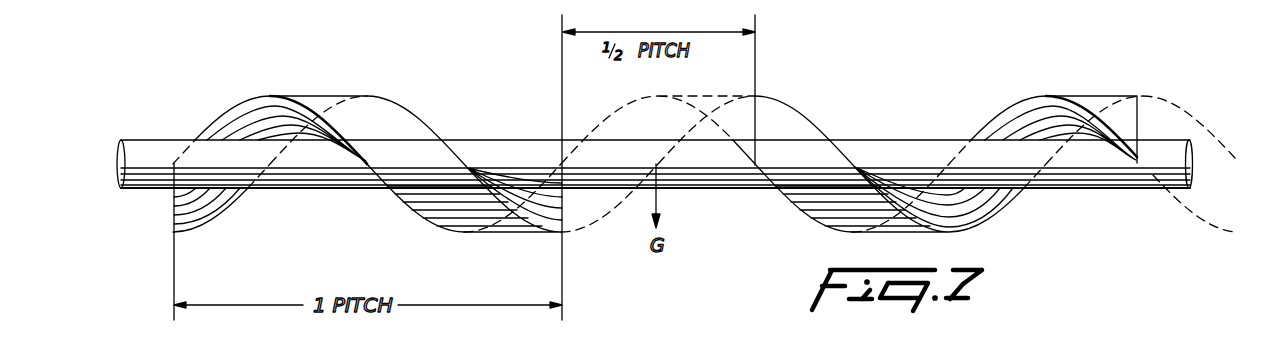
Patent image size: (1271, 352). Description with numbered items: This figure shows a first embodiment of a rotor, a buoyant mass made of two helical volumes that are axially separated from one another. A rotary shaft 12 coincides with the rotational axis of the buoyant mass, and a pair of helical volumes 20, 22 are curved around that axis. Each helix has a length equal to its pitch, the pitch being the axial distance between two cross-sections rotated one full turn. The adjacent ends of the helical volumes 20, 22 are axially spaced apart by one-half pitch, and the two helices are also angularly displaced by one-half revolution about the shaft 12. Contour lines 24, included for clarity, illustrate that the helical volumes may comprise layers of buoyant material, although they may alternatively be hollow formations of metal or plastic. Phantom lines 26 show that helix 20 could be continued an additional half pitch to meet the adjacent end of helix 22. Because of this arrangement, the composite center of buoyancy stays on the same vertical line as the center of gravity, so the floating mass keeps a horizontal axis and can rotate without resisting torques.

The rotary shaft 12 is at (145, 146).
The helical volume 20 is at (402, 122).
The helical volume 22 is at (790, 118).
The contour lines 24 is at (195, 222).
The phantom lines 26 is at (566, 233).